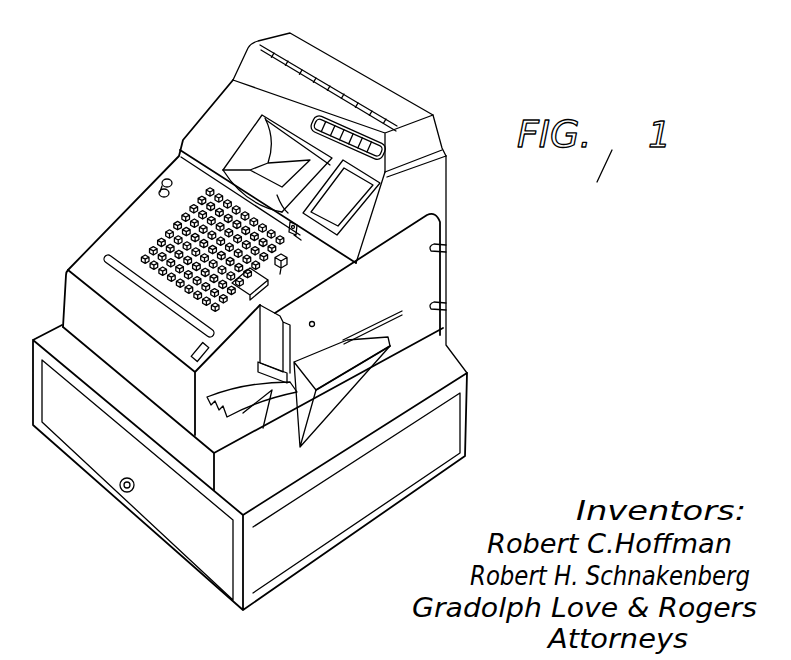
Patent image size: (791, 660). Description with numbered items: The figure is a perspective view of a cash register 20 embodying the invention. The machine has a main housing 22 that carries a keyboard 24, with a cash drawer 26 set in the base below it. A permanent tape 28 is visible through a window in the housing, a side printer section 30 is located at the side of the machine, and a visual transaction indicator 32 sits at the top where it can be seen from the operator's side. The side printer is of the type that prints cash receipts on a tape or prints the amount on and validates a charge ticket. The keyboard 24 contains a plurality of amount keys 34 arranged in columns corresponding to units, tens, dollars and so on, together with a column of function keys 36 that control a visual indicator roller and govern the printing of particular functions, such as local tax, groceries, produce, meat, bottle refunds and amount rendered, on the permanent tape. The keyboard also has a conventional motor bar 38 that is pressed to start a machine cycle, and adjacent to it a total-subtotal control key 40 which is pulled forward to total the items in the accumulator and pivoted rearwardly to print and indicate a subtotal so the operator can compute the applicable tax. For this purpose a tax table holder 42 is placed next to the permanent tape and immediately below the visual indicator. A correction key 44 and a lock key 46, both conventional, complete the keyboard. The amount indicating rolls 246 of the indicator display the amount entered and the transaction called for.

The cash register 20 is at (357, 65).
The main housing 22 is at (125, 232).
The keyboard 24 is at (138, 265).
The cash drawer 26 is at (104, 463).
The permanent tape 28 is at (265, 163).
The side printer section 30 is at (344, 406).
The visual transaction indicator 32 is at (412, 176).
The amount keys 34 is at (188, 282).
The function keys 36 is at (210, 328).
The motor bar 38 is at (250, 299).
The total-subtotal control key 40 is at (283, 268).
The tax table holder 42 is at (352, 197).
The correction key 44 is at (298, 233).
The lock key 46 is at (163, 186).
The amount indicating rolls 246 is at (343, 113).